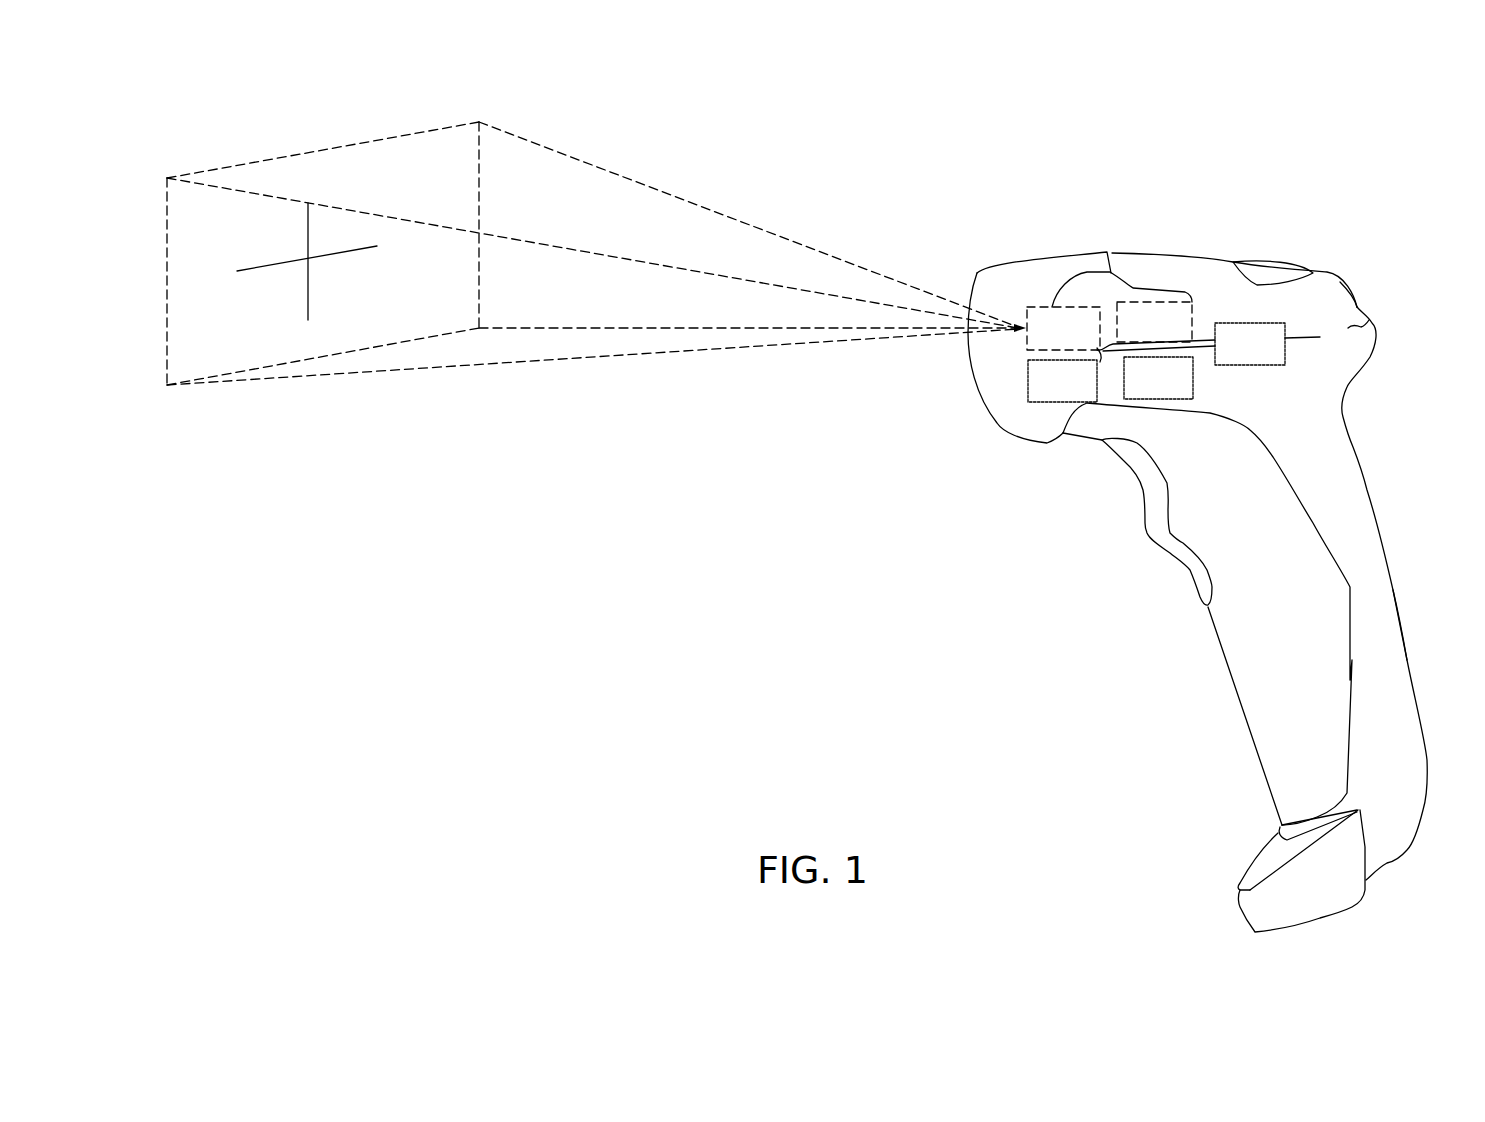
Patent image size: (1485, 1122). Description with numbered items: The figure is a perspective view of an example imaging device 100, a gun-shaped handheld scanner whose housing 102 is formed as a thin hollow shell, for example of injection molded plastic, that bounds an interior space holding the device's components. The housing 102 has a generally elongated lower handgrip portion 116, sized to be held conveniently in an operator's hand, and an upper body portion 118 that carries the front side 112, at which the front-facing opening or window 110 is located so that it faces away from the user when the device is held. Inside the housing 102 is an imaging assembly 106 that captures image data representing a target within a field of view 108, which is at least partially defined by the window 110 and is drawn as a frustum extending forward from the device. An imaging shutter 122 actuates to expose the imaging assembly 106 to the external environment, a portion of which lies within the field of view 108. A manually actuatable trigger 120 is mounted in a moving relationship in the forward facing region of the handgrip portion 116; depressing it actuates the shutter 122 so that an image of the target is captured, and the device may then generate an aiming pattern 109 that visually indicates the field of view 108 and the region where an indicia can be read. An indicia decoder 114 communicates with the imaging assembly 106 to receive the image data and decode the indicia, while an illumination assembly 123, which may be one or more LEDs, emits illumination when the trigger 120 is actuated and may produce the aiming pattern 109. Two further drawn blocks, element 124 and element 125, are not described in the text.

The imaging device 100 is at (1335, 171).
The housing 102 is at (1045, 262).
The imaging assembly 106 is at (1087, 342).
The field of view 108 is at (753, 225).
The aiming pattern 109 is at (238, 271).
The front-facing opening or window 110 is at (972, 372).
The front side 112 is at (930, 495).
The indicia decoder 114 is at (1177, 334).
The handgrip portion 116 is at (1393, 590).
The upper body portion 118 is at (1347, 290).
The trigger 120 is at (1146, 530).
The imaging shutter 122 is at (1087, 397).
The illumination assembly 123 is at (1182, 392).
The communication interface 124 is at (1272, 360).
The grip region 125 is at (1107, 662).